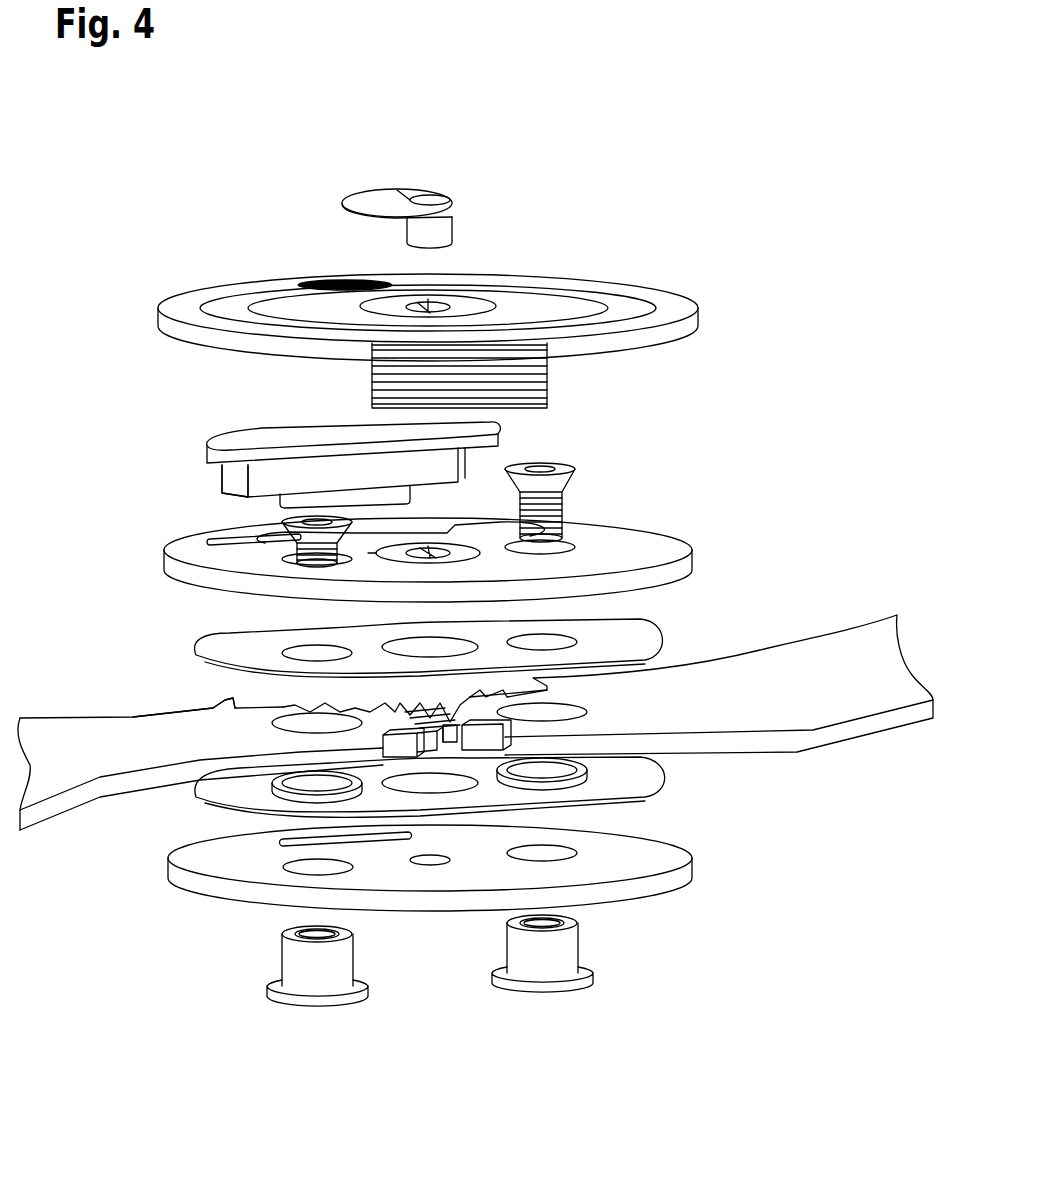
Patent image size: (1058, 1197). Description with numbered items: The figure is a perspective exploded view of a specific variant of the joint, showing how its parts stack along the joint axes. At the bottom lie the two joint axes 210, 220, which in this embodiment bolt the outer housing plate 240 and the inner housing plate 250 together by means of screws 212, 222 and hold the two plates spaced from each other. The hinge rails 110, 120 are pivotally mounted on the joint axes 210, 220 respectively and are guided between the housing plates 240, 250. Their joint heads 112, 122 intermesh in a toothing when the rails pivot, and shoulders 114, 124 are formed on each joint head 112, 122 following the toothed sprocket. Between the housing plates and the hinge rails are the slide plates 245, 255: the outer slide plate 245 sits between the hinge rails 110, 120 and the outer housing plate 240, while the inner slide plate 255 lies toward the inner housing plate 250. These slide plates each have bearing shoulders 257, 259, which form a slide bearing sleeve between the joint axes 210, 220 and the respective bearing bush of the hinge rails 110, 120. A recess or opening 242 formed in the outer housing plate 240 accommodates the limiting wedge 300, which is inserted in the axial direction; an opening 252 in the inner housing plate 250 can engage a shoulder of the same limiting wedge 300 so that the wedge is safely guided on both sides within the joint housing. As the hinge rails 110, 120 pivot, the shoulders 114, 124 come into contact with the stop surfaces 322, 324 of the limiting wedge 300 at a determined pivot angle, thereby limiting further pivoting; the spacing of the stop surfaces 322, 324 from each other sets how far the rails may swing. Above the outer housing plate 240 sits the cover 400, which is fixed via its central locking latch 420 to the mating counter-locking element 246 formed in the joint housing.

The hinge rail 110 is at (688, 654).
The joint head 112 is at (467, 713).
The shoulder 114 is at (550, 684).
The hinge rail 120 is at (244, 712).
The joint head 122 is at (290, 708).
The shoulder 124 is at (233, 705).
The joint axis 210 is at (545, 962).
The screw 212 is at (560, 481).
The joint axis 220 is at (320, 975).
The screw 222 is at (300, 543).
The outer housing plate 240 is at (440, 552).
The recess or opening 242 is at (250, 545).
The outer slide plate 245 is at (660, 632).
The counter-locking element 246 is at (470, 545).
The inner housing plate 250 is at (479, 880).
The opening 252 is at (288, 848).
The inner slide plate 255 is at (450, 800).
The bearing shoulder 257 is at (580, 775).
The bearing shoulder 259 is at (300, 787).
The limiting wedge 300 is at (357, 452).
The stop surface 322 is at (462, 460).
The stop surface 324 is at (235, 482).
The cover 400 is at (176, 310).
The locking latch 420 is at (440, 198).